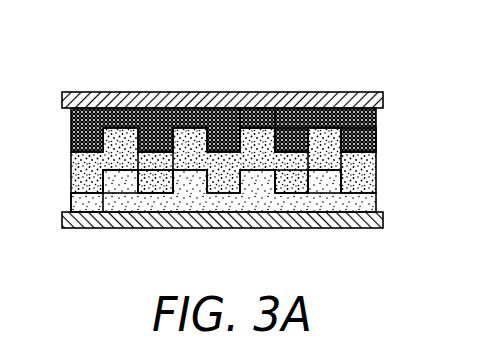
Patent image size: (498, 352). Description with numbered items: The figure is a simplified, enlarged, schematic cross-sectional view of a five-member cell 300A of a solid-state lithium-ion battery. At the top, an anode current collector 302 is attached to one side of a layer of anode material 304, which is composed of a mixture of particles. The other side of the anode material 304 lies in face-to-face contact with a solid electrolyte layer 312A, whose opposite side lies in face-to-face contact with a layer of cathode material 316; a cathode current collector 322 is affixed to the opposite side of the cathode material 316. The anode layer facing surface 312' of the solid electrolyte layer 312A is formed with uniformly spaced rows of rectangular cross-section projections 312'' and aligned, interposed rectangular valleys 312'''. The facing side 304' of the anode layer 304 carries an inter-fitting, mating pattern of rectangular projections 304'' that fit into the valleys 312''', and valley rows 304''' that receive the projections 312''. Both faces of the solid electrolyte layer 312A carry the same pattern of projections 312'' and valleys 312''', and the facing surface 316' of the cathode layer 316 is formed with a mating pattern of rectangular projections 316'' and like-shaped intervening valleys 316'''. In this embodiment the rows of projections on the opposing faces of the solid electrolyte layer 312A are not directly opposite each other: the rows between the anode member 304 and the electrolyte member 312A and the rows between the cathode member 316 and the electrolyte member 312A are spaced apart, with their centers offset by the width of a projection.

The five-member cell 300A is at (236, 149).
The anode current collector 302 is at (204, 92).
The layer of anode material 304 is at (265, 81).
The facing side of anode layer 304' is at (400, 130).
The rectangular cross-section projections 304'' is at (306, 96).
The valley rows 304''' is at (280, 69).
The solid electrolyte layer 312A is at (377, 167).
The anode layer facing surface 312' is at (378, 166).
The projections 312'' is at (249, 152).
The valleys 312''' is at (174, 90).
The layer of cathode material 316 is at (233, 141).
The facing surface of cathode layer 316' is at (384, 191).
The rectangular projections 316'' is at (95, 120).
The intervening valleys 316''' is at (54, 171).
The cathode current collector 322 is at (212, 229).